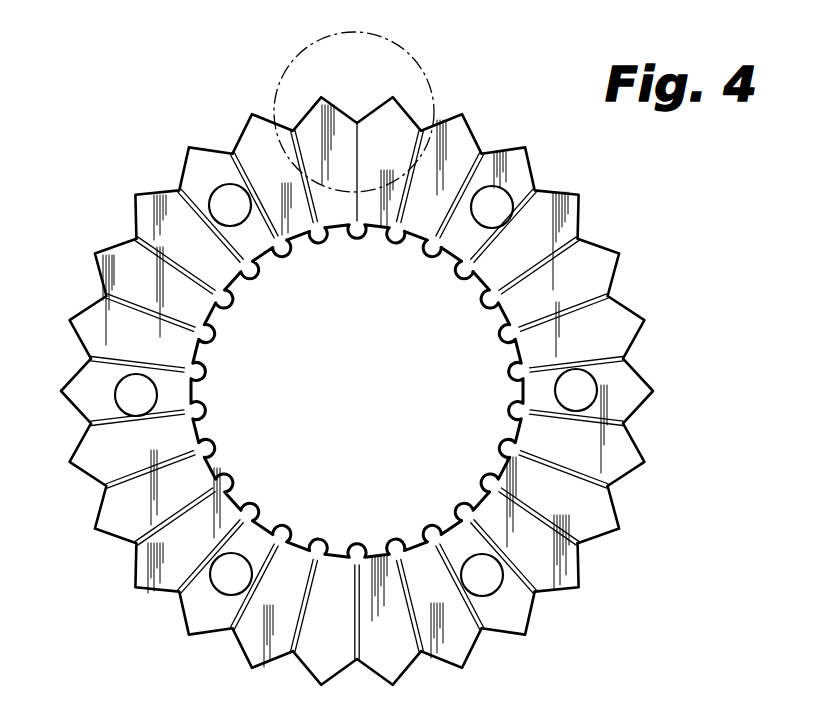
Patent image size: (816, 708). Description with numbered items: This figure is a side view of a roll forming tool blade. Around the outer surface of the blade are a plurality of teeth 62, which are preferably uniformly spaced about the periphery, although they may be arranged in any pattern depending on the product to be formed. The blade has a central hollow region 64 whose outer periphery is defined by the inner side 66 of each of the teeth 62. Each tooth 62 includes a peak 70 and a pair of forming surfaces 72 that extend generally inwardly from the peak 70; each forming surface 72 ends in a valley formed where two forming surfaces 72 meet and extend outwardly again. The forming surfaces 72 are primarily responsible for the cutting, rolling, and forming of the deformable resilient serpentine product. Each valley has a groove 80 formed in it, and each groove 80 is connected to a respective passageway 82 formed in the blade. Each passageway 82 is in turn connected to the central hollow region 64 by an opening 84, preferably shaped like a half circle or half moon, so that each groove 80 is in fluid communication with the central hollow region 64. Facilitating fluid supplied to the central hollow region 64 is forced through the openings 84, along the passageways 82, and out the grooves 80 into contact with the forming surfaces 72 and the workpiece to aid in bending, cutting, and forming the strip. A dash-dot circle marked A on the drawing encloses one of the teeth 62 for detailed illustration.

The teeth 62 is at (585, 518).
The central hollow region 64 is at (463, 418).
The inner side 66 is at (370, 556).
The peak 70 is at (188, 148).
The forming surfaces 72 is at (179, 187).
The groove 80 is at (423, 655).
The passageway 82 is at (583, 517).
The opening 84 is at (467, 268).
The detail area A is at (420, 67).